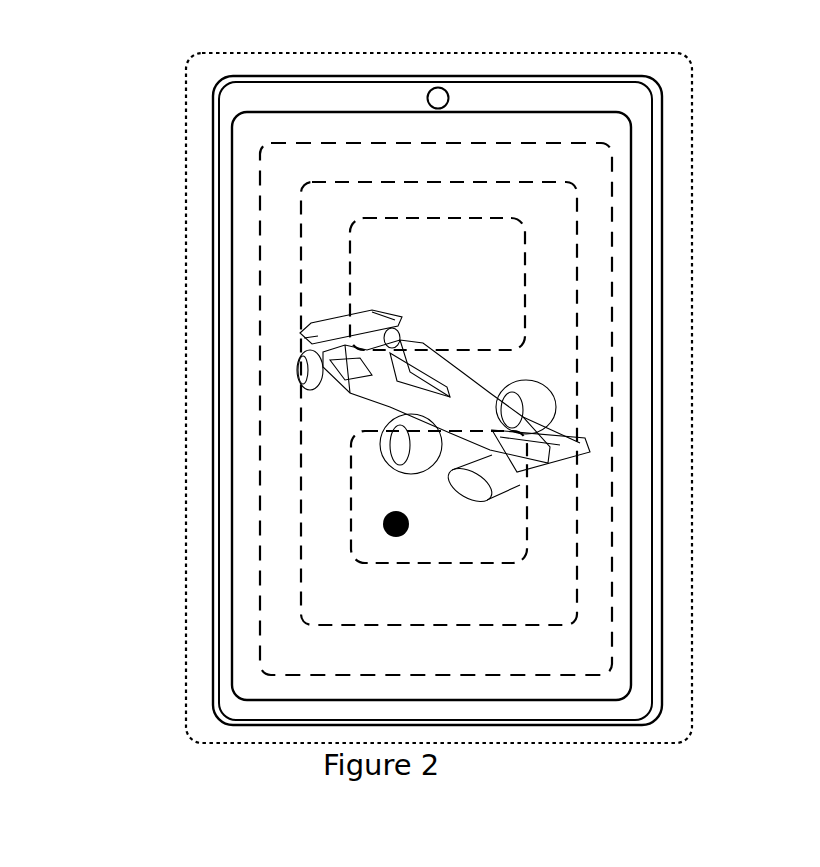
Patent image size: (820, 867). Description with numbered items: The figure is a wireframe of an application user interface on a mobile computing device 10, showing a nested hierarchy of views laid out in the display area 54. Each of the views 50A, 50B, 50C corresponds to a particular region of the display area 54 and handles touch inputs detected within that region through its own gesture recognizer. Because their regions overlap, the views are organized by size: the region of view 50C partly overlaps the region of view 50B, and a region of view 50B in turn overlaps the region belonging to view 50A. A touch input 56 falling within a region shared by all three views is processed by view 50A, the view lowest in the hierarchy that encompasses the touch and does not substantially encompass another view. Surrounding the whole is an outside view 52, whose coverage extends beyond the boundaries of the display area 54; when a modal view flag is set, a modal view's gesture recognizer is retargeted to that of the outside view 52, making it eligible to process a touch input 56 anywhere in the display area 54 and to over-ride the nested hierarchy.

The mobile computing device 10 is at (427, 371).
The outside view 52 is at (481, 398).
The view 50C is at (512, 409).
The view 50B is at (549, 403).
The view 50A is at (575, 390).
The touch input 56 is at (583, 560).
The display area 54 is at (155, 117).